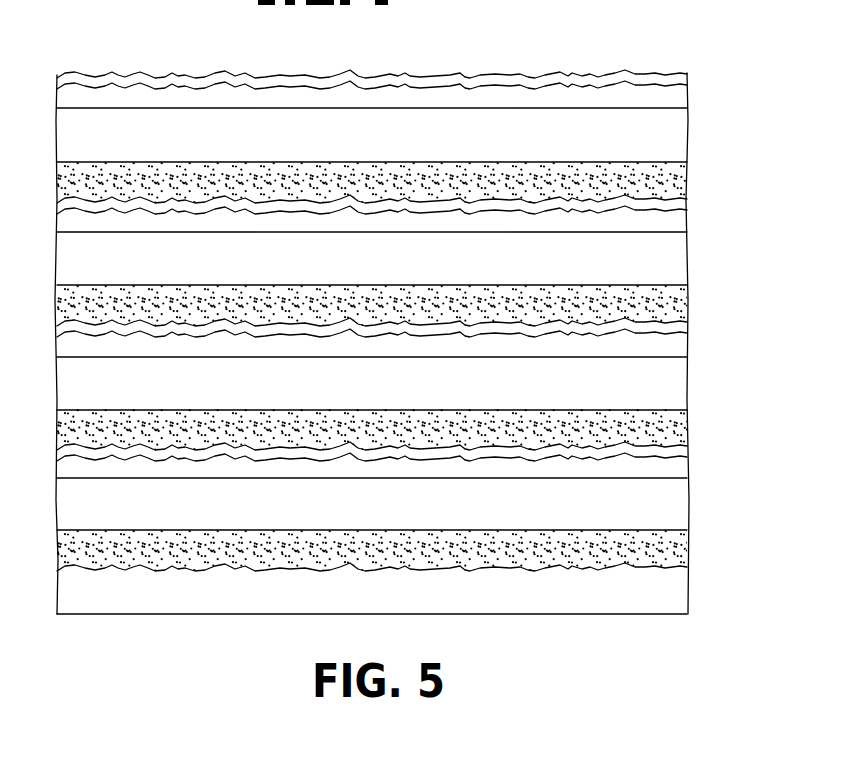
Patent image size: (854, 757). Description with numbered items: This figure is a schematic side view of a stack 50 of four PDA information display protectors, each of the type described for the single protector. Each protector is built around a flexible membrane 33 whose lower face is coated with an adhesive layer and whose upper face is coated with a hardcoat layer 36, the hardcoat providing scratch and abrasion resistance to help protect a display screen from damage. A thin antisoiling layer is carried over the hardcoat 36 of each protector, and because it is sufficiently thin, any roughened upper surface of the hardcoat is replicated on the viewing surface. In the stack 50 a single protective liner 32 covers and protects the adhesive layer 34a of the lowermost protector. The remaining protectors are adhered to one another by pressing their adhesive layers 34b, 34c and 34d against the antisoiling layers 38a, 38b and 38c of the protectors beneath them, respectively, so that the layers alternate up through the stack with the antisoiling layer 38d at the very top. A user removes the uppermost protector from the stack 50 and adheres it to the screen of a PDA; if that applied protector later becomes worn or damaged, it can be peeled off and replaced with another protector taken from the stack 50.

The stack 50 is at (597, 43).
The protective liner 32 is at (677, 583).
The flexible membrane 33 is at (677, 118).
The adhesive layer 34a is at (677, 553).
The adhesive layer 34b is at (677, 430).
The adhesive layer 34c is at (675, 307).
The adhesive layer 34d is at (677, 181).
The hardcoat layer 36 is at (672, 97).
The antisoiling layer 38a is at (685, 450).
The antisoiling layer 38b is at (680, 328).
The antisoiling layer 38c is at (688, 203).
The antisoiling layer 38d is at (688, 78).